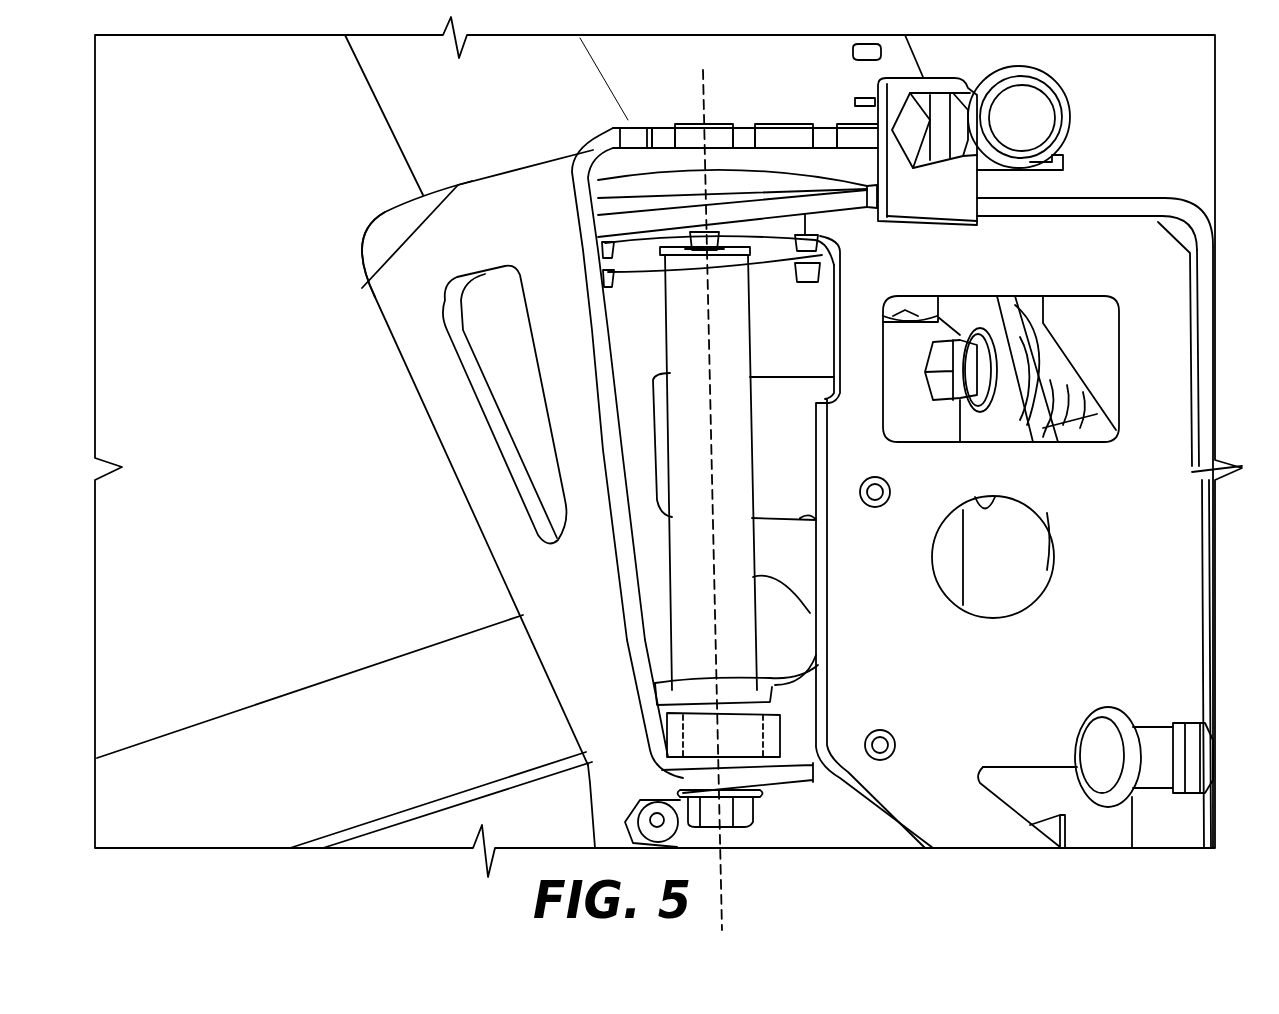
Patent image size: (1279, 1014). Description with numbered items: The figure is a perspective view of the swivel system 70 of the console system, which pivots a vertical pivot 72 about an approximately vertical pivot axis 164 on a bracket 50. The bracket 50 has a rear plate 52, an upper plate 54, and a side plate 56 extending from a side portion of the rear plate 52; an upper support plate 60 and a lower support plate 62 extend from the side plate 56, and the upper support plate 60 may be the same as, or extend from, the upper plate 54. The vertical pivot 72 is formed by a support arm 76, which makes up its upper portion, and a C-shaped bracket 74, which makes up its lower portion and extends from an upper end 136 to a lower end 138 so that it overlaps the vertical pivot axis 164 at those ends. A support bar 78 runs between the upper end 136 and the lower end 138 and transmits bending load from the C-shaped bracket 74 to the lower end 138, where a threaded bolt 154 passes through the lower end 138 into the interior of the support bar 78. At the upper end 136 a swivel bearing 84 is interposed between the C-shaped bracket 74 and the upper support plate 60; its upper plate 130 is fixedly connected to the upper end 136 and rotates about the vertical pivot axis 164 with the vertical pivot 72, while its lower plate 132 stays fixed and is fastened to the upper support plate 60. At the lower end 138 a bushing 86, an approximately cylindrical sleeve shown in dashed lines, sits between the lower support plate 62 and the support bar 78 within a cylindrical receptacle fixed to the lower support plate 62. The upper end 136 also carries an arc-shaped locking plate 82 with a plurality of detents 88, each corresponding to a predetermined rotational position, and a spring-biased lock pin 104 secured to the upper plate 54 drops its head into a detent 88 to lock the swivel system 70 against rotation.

The bracket 50 is at (1128, 165).
The rear plate 52 is at (1207, 260).
The upper plate 54 is at (1152, 210).
The side plate 56 is at (982, 817).
The upper support plate 60 is at (840, 200).
The lower support plate 62 is at (805, 707).
The swivel system 70 is at (263, 345).
The vertical pivot 72 is at (395, 186).
The C-shaped bracket 74 is at (458, 445).
The support arm 76 is at (420, 123).
The support bar 78 is at (690, 627).
The locking plate 82 is at (693, 135).
The swivel bearing 84 is at (598, 190).
The bushing 86 is at (660, 683).
The detent 88 is at (663, 138).
The lock pin 104 is at (1032, 100).
The upper plate of swivel bearing 130 is at (625, 182).
The lower plate of swivel bearing 132 is at (608, 210).
The upper end 136 is at (362, 290).
The lower end 138 is at (660, 778).
The threaded bolt 154 is at (727, 827).
The vertical pivot axis 164 is at (722, 888).